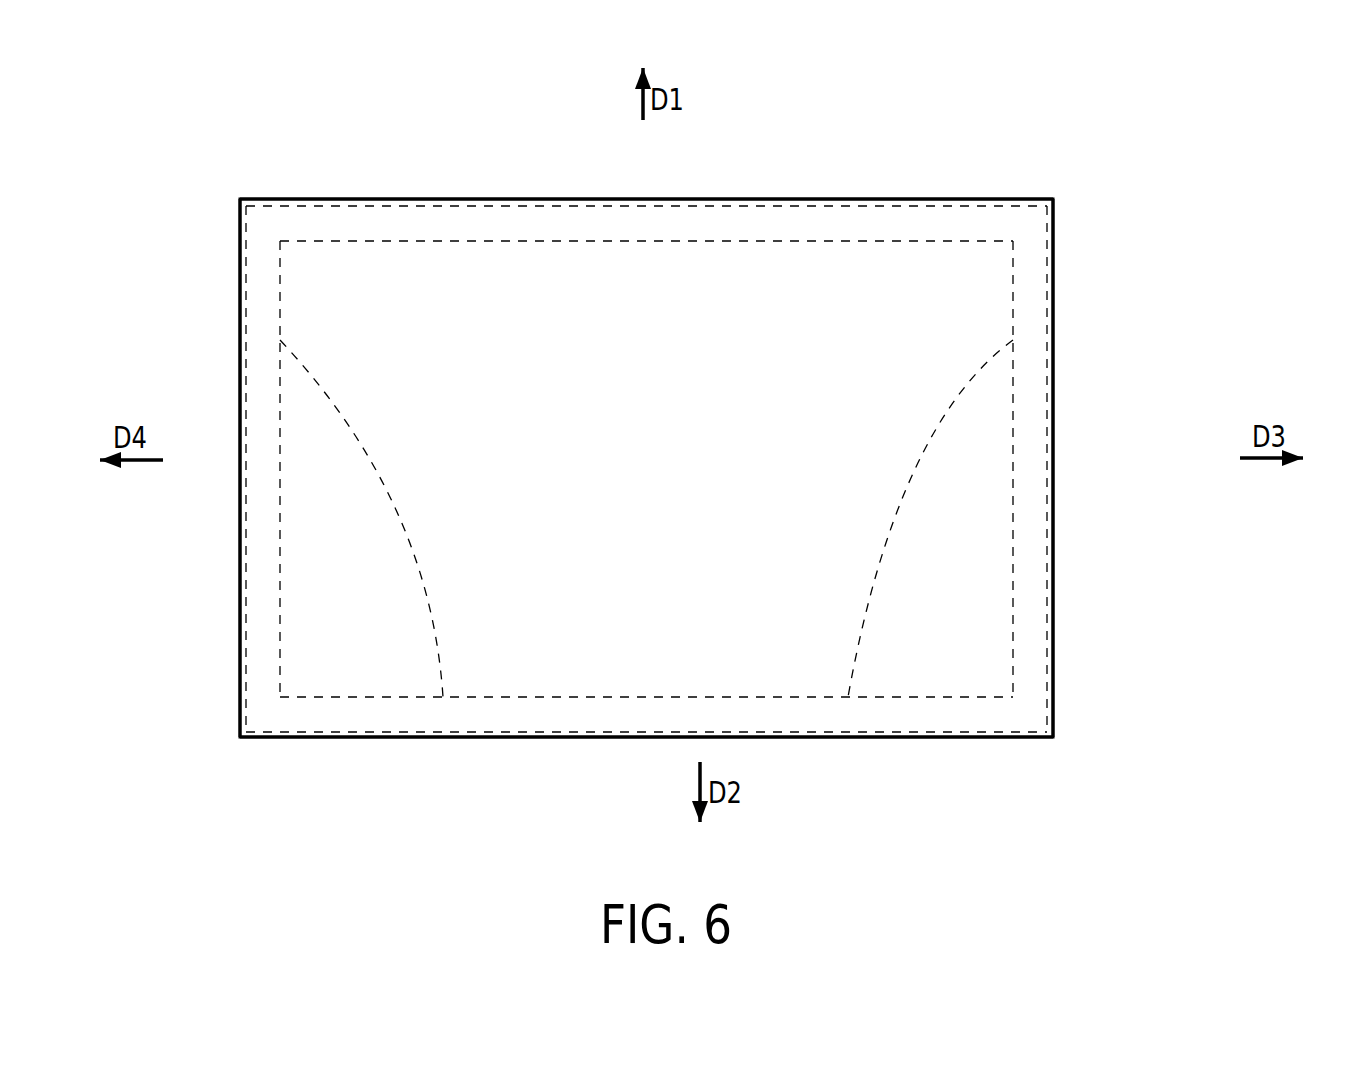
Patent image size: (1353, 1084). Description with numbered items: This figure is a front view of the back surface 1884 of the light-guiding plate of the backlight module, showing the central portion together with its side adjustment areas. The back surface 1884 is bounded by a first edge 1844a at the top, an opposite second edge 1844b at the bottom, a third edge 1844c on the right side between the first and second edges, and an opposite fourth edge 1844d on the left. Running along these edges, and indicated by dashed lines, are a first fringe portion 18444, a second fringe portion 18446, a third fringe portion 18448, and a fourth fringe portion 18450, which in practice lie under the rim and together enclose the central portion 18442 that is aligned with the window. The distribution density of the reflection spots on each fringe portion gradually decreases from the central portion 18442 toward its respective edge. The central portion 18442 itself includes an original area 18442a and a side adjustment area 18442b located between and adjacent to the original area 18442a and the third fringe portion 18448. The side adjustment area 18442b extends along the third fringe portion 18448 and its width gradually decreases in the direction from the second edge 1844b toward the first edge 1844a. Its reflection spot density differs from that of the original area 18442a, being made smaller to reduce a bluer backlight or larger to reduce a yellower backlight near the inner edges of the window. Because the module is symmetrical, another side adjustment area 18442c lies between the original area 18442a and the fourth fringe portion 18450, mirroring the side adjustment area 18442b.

The back surface 1884 is at (975, 118).
The first edge 1844a is at (740, 200).
The second edge 1844b is at (960, 740).
The third edge 1844c is at (1057, 653).
The fourth edge 1844d is at (237, 654).
The first fringe portion 18444 is at (575, 217).
The second fringe portion 18446 is at (780, 722).
The third fringe portion 18448 is at (1037, 545).
The fourth fringe portion 18450 is at (257, 377).
The central portion 18442 is at (646, 597).
The original area 18442a is at (530, 655).
The side adjustment area 18442b is at (883, 628).
The side adjustment area 18442c is at (370, 657).